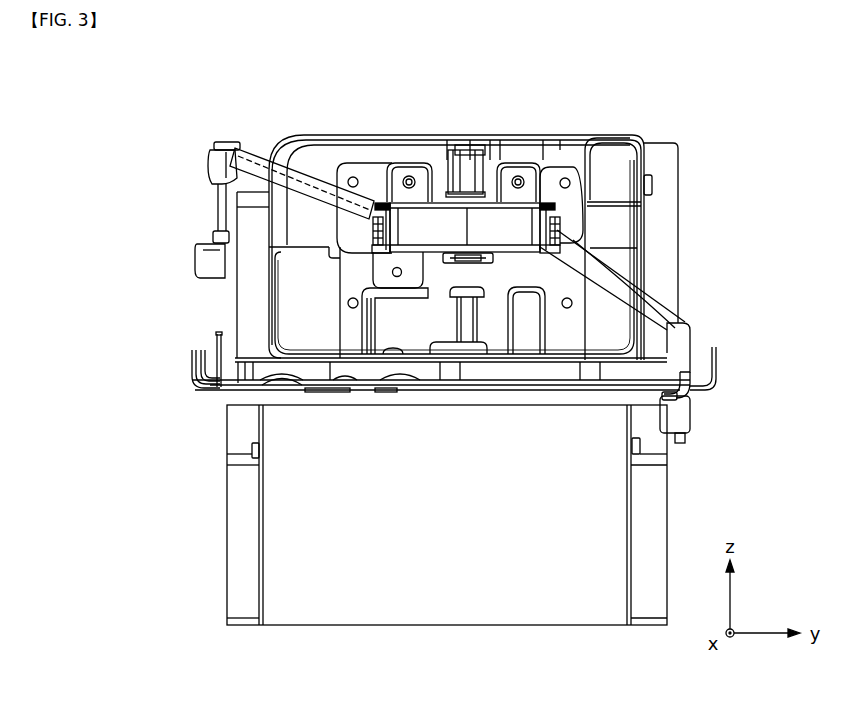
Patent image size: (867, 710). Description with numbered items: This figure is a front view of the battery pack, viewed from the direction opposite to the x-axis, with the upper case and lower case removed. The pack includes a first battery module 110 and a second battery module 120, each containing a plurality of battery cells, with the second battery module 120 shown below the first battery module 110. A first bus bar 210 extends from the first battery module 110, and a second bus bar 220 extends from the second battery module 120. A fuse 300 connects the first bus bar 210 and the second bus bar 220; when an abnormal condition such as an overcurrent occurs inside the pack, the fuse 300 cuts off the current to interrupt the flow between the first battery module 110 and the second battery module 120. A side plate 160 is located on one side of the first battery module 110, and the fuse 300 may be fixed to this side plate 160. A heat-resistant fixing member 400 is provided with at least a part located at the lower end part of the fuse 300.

The first battery module 110 is at (250, 310).
The second battery module 120 is at (448, 598).
The side plate 160 is at (618, 158).
The first bus bar 210 is at (262, 165).
The second bus bar 220 is at (603, 283).
The fuse 300 is at (448, 223).
The fixing member 400 is at (473, 258).